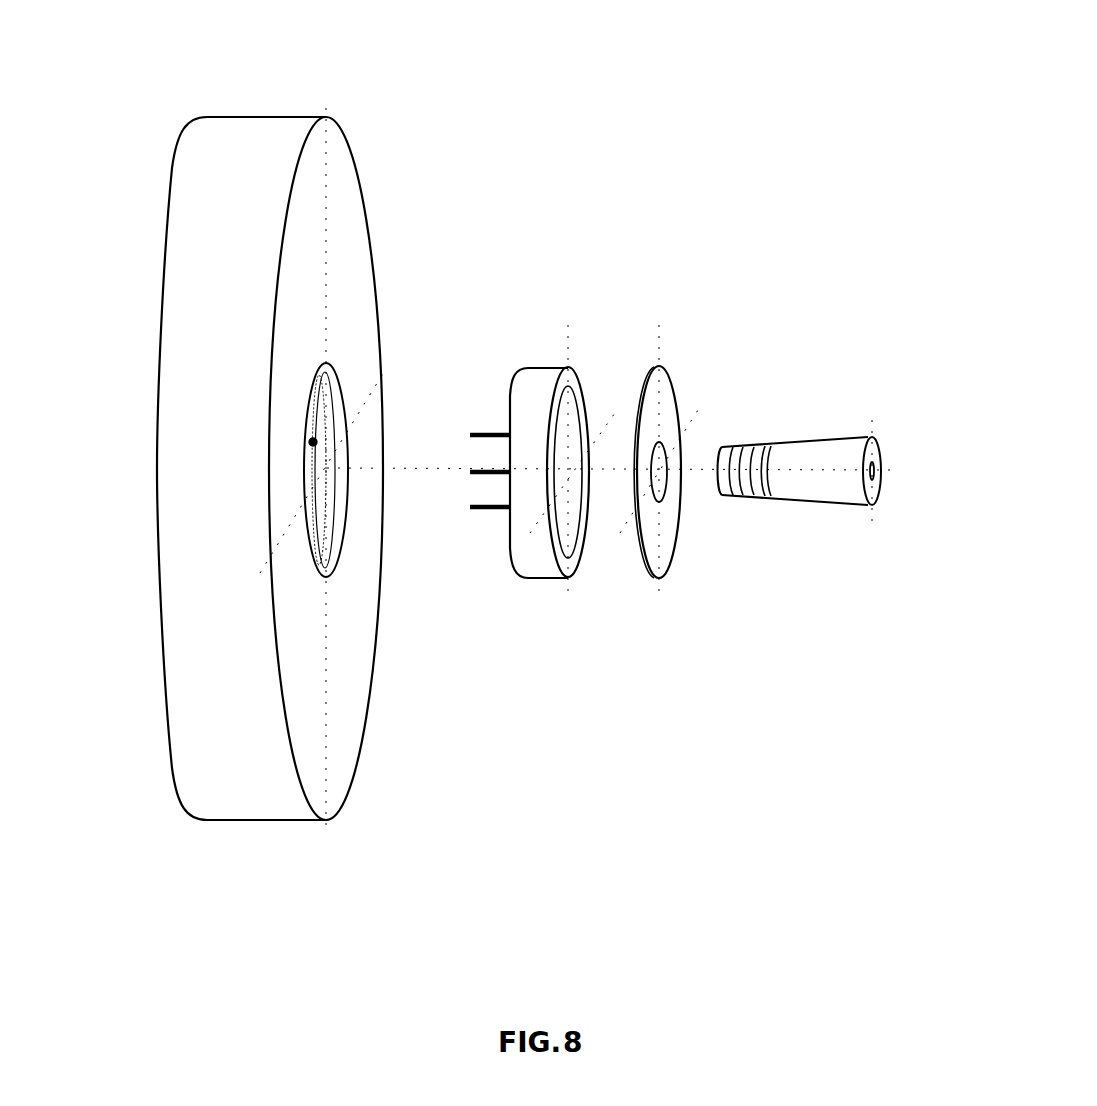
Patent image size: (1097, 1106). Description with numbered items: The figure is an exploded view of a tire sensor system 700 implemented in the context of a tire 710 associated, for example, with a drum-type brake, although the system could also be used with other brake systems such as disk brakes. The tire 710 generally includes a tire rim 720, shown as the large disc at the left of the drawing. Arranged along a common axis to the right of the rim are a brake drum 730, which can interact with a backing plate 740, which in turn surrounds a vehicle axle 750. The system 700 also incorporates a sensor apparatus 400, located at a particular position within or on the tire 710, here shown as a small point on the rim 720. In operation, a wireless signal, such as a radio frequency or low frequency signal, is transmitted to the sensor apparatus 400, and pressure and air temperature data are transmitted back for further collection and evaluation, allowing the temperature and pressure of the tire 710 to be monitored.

The tire sensor system 700 is at (795, 98).
The tire 710 is at (392, 687).
The tire rim 720 is at (203, 150).
The sensor apparatus 400 is at (310, 441).
The brake drum 730 is at (492, 552).
The backing plate 740 is at (643, 560).
The vehicle axle 750 is at (797, 502).